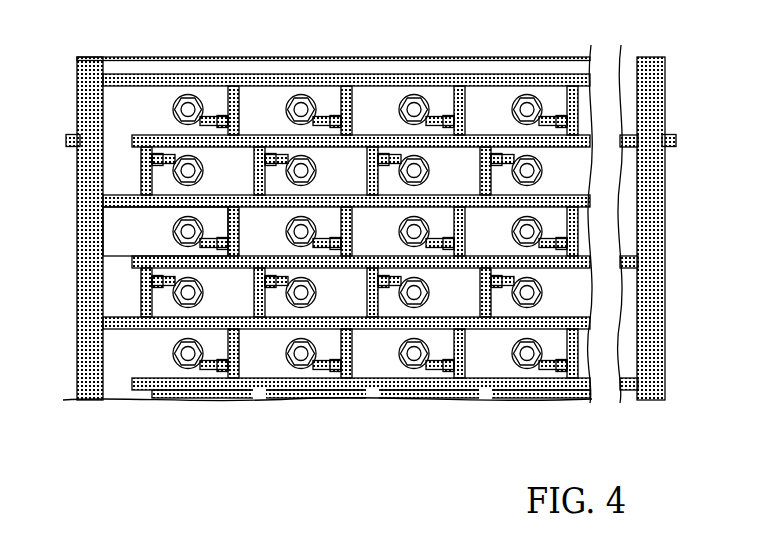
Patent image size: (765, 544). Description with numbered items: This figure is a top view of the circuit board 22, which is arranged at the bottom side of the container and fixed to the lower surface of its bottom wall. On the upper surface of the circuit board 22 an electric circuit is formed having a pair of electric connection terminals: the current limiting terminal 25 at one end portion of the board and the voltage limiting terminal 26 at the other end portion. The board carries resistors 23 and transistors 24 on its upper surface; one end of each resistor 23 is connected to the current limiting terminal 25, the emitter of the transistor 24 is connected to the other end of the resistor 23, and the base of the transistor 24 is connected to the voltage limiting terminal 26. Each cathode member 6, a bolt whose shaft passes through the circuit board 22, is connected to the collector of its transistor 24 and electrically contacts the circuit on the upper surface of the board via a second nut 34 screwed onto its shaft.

The cathode member 6 is at (302, 104).
The circuit board 22 is at (144, 237).
The resistor 23 is at (142, 178).
The transistor 24 is at (157, 159).
The current limiting terminal 25 is at (72, 139).
The voltage limiting terminal 26 is at (670, 139).
The second nut 34 is at (313, 107).